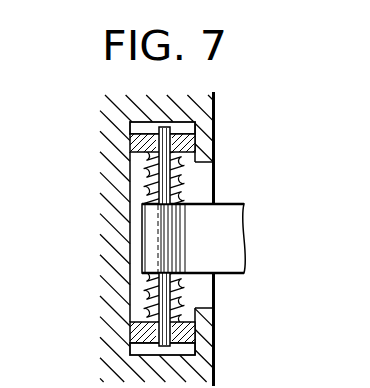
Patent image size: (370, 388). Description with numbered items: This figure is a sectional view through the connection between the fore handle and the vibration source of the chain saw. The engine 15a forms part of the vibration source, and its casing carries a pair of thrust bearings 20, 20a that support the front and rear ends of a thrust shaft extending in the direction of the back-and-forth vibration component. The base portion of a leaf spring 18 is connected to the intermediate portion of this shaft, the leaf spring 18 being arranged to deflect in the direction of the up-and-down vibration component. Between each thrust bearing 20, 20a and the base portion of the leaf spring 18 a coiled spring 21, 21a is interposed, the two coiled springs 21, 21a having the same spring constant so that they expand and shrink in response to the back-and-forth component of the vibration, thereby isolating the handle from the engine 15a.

The engine 15a is at (196, 370).
The leaf spring 18 is at (225, 243).
The thrust bearing 20 is at (131, 143).
The thrust bearing 20a is at (133, 336).
The coiled spring 21 is at (143, 173).
The coiled spring 21a is at (143, 292).